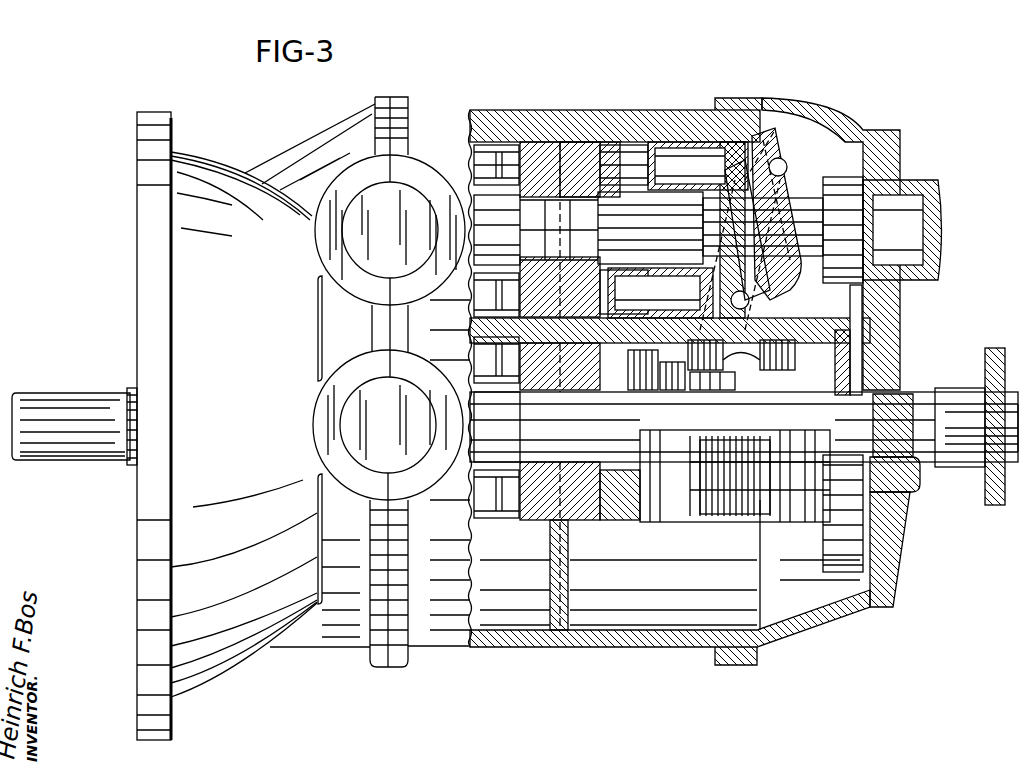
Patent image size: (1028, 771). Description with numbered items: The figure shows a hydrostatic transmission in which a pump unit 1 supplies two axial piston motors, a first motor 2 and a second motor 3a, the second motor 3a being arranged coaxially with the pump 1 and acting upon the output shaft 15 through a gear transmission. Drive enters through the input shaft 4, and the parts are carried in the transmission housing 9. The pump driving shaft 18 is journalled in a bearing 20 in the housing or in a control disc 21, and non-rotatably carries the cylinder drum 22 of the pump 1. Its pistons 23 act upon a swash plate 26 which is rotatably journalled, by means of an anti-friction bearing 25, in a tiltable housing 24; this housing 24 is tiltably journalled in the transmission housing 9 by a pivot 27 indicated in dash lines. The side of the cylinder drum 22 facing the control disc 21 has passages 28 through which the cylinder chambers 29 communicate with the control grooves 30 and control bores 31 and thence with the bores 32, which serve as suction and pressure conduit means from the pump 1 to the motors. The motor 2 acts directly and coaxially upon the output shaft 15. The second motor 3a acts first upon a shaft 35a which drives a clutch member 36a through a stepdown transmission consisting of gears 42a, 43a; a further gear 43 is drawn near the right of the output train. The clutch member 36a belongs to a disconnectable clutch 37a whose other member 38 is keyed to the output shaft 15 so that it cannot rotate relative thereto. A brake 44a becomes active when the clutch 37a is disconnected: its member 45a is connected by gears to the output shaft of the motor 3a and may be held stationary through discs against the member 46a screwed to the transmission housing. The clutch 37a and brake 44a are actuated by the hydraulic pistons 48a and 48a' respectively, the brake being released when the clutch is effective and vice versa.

The pump unit 1 is at (495, 95).
The first motor 2 is at (475, 528).
The second motor 3a is at (675, 142).
The input shaft 4 is at (84, 458).
The transmission housing 9 is at (145, 236).
The output shaft 15 is at (615, 470).
The pump driving shaft 18 is at (470, 275).
The bearing 20 is at (660, 293).
The control disc 21 is at (560, 142).
The cylinder drum 22 is at (458, 192).
The pistons 23 is at (733, 262).
The tiltable housing 24 is at (840, 177).
The anti-friction bearing 25 is at (782, 175).
The swash plate 26 is at (778, 160).
The pivot 27 is at (396, 248).
The passages 28 is at (480, 160).
The cylinder chambers 29 is at (625, 148).
The control grooves 30 is at (530, 142).
The control bores 31 is at (598, 196).
The bores 32 is at (548, 411).
The shaft 35a is at (800, 256).
The clutch member 36a is at (876, 330).
The disconnectable clutch 37a is at (765, 500).
The clutch member 38 is at (800, 342).
The gear 42a is at (868, 185).
The gear 43 is at (830, 572).
The gear 43a is at (892, 298).
The brake 44a is at (700, 500).
The brake member 45a is at (705, 376).
The brake member 46a is at (672, 365).
The hydraulic piston 48a is at (937, 426).
The hydraulic piston 48a' is at (621, 386).